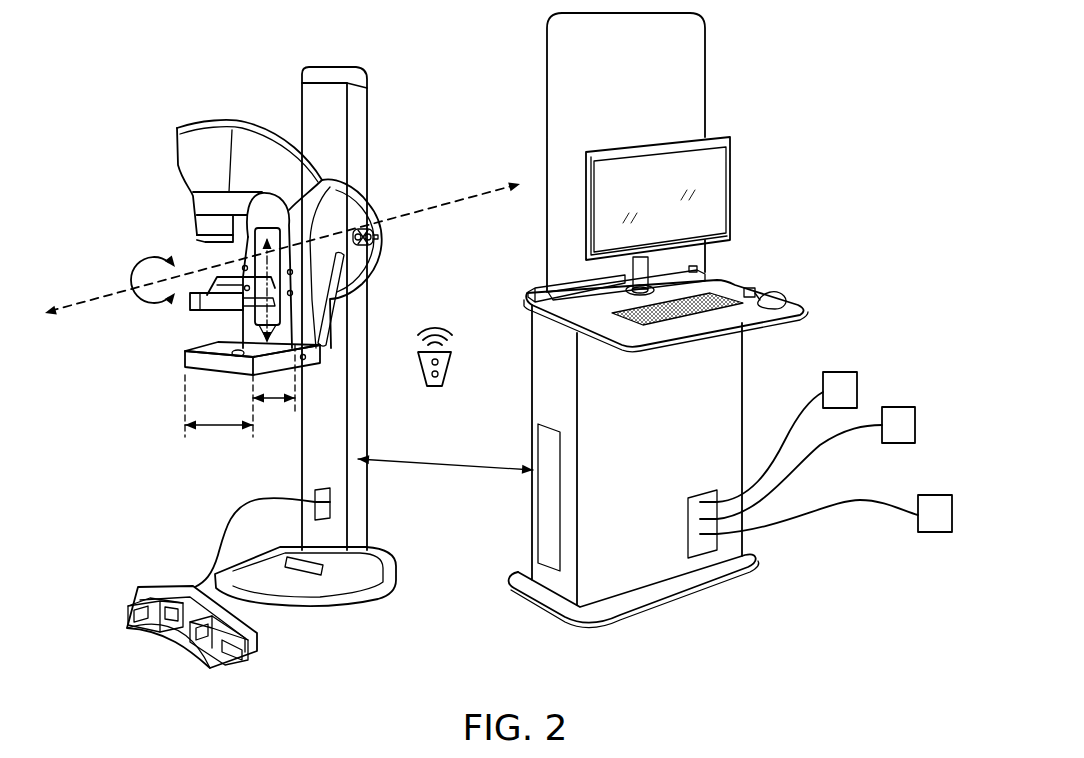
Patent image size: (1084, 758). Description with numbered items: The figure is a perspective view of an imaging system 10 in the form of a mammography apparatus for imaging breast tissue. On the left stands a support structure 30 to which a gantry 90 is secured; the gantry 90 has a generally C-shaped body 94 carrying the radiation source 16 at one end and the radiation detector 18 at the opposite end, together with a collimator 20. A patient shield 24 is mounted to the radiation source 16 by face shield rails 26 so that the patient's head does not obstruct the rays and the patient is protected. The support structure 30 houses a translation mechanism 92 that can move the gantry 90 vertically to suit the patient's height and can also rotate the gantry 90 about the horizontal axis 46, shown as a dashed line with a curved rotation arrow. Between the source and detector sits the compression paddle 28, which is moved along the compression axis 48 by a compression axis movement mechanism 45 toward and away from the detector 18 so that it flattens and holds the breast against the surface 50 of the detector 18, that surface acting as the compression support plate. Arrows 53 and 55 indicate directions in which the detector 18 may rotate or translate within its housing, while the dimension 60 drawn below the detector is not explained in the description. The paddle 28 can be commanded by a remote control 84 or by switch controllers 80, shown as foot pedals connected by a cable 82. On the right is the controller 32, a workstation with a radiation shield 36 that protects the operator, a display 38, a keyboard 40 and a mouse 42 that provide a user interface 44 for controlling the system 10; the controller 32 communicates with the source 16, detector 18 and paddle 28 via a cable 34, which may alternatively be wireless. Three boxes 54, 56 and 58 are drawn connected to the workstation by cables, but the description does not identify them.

The imaging system 10 is at (218, 52).
The radiation source 16 is at (205, 197).
The radiation detector 18 is at (200, 366).
The collimator 20 is at (208, 226).
The patient shield 24 is at (210, 244).
The face shield rails 26 is at (206, 210).
The compression paddle 28 is at (212, 313).
The support structure 30 is at (358, 114).
The controller 32 is at (772, 48).
The cable 34 is at (477, 462).
The radiation shield 36 is at (684, 95).
The display 38 is at (733, 161).
The keyboard 40 is at (737, 310).
The mouse 42 is at (770, 296).
The user interface 44 is at (721, 214).
The compression axis movement mechanism 45 is at (280, 258).
The axis 46 is at (90, 298).
The compression axis 48 is at (277, 310).
The surface of the radiation detector 50 is at (214, 345).
The arrows 53 is at (215, 426).
The processor 54 is at (846, 372).
The arrows 55 is at (285, 399).
The memory 56 is at (904, 407).
The controller 58 is at (942, 495).
The detector opening 60 is at (238, 357).
The switch controllers 80 is at (158, 648).
The cable 82 is at (220, 512).
The remote control 84 is at (452, 364).
The gantry 90 is at (172, 117).
The translation mechanism 92 is at (380, 197).
The C-shaped body 94 is at (212, 142).